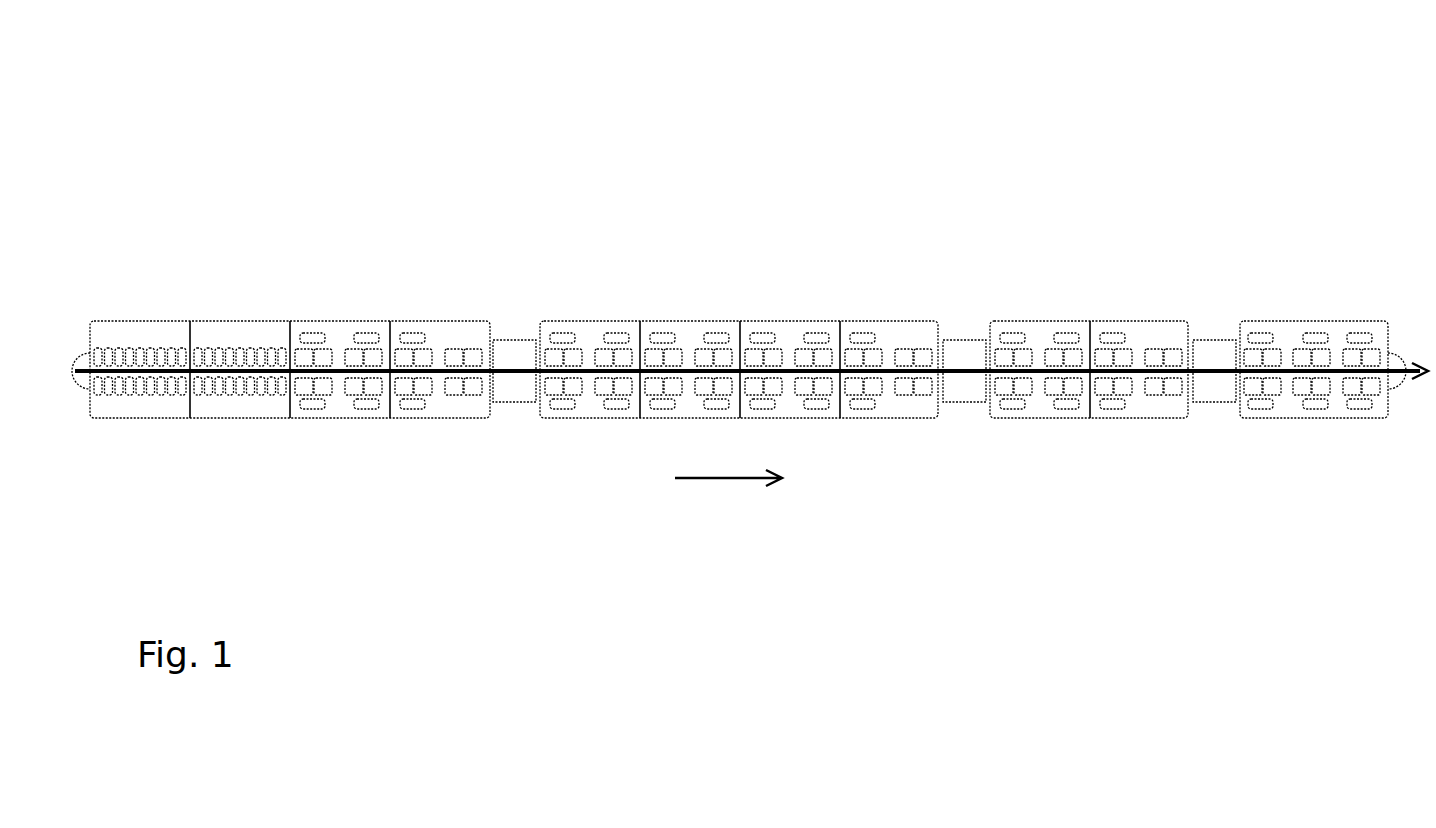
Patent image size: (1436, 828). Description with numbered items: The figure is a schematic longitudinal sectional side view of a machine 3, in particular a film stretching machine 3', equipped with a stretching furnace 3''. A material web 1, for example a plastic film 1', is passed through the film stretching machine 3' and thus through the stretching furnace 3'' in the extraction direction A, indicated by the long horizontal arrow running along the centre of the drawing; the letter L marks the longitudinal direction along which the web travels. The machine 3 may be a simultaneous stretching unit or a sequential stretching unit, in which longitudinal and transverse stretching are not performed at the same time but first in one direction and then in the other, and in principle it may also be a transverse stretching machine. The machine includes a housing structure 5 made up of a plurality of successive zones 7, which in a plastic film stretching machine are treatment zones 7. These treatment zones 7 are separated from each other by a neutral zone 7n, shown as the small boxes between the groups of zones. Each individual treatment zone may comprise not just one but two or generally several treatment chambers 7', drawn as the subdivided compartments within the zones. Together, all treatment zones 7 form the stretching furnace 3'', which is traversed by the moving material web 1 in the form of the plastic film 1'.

The material web 1 is at (750, 307).
The plastic film 1' is at (747, 307).
The machine 3 is at (570, 244).
The film stretching machine 3' is at (823, 244).
The stretching furnace 3'' is at (1198, 244).
The housing structure 5 is at (1010, 194).
The zones 7 is at (739, 304).
The treatment chambers 7' is at (589, 302).
The neutral zone 7n is at (515, 352).
The extraction direction A is at (1412, 372).
The longitudinal direction L is at (725, 480).